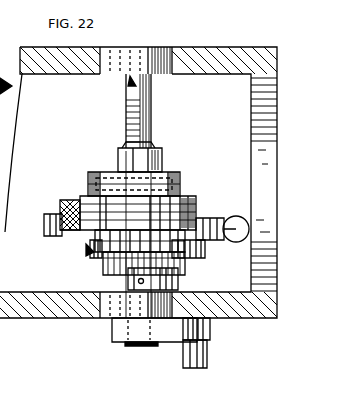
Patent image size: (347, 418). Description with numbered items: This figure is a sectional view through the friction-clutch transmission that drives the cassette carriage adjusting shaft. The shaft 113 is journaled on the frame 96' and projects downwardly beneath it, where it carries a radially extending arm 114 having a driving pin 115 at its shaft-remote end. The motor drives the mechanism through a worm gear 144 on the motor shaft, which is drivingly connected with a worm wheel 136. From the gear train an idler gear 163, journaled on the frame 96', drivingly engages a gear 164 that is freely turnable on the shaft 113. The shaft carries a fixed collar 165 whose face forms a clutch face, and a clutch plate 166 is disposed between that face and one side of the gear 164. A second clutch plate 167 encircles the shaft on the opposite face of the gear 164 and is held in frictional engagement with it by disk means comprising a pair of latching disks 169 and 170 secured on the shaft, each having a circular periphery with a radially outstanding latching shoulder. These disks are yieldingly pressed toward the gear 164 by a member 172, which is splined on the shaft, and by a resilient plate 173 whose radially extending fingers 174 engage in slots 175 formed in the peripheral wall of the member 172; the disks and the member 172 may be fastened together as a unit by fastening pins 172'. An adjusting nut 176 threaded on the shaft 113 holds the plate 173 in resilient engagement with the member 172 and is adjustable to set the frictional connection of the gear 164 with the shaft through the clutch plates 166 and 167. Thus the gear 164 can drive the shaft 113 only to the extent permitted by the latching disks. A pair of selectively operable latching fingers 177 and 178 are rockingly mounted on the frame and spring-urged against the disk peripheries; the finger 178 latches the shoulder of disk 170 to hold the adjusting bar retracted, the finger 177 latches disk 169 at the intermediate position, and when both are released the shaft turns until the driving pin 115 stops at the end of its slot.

The frame 96' is at (148, 171).
The shaft 113 is at (152, 88).
The arm 114 is at (164, 344).
The driving pin 115 is at (200, 354).
The worm wheel 136 is at (88, 248).
The worm gear 144 is at (232, 229).
The idler gear 163 is at (200, 254).
The gear 164 is at (170, 262).
The collar 165 is at (122, 268).
The clutch plate 166 is at (110, 262).
The clutch plate 167 is at (80, 240).
The latching disk 169 is at (196, 206).
The latching disk 170 is at (210, 220).
The member 172 is at (130, 181).
The fastening pins 172' is at (116, 207).
The resilient plate 173 is at (112, 172).
The fingers 174 is at (96, 172).
The slots 175 is at (90, 182).
The adjusting nut 176 is at (118, 152).
The latching finger 177 is at (62, 208).
The latching finger 178 is at (44, 222).